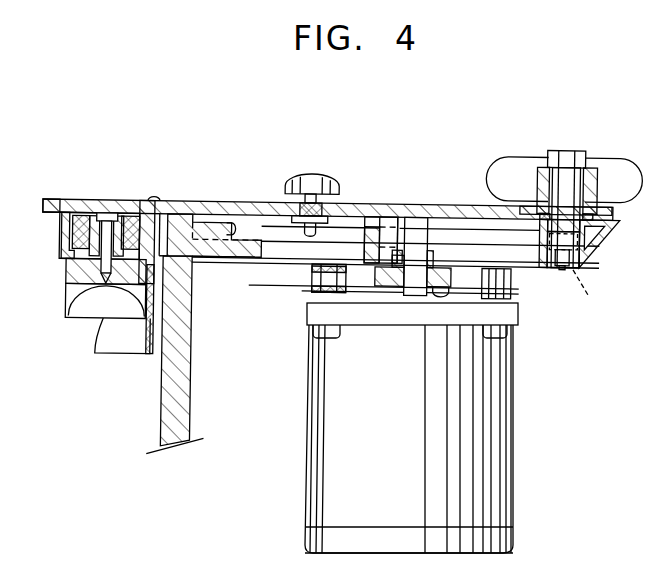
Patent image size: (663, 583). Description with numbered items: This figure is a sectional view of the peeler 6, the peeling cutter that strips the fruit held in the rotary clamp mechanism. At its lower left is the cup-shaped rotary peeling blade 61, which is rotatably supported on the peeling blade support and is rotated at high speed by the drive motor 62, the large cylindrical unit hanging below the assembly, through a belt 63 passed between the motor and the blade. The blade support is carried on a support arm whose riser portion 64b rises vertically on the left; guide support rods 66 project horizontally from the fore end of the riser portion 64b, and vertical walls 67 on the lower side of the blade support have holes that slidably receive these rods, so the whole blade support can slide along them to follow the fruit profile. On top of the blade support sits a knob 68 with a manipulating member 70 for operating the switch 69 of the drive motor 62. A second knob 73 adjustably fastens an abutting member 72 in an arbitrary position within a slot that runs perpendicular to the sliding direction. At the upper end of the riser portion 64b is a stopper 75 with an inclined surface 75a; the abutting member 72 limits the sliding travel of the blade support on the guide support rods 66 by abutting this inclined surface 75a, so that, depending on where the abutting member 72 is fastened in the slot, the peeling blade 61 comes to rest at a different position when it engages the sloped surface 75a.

The peeler 6 is at (196, 114).
The cup-shaped rotary peeling blade 61 is at (68, 290).
The drive motor 62 is at (502, 412).
The belt 63 is at (250, 266).
The riser portion 64b is at (182, 414).
The guide support rods 66 is at (261, 214).
The vertical walls 67 is at (366, 242).
The knob 68 is at (514, 162).
The switch 69 is at (568, 264).
The manipulating member 70 is at (570, 147).
The abutting member 72 is at (299, 232).
The knob 73 is at (313, 172).
The stopper 75 is at (214, 226).
The inclined surface 75a is at (218, 260).